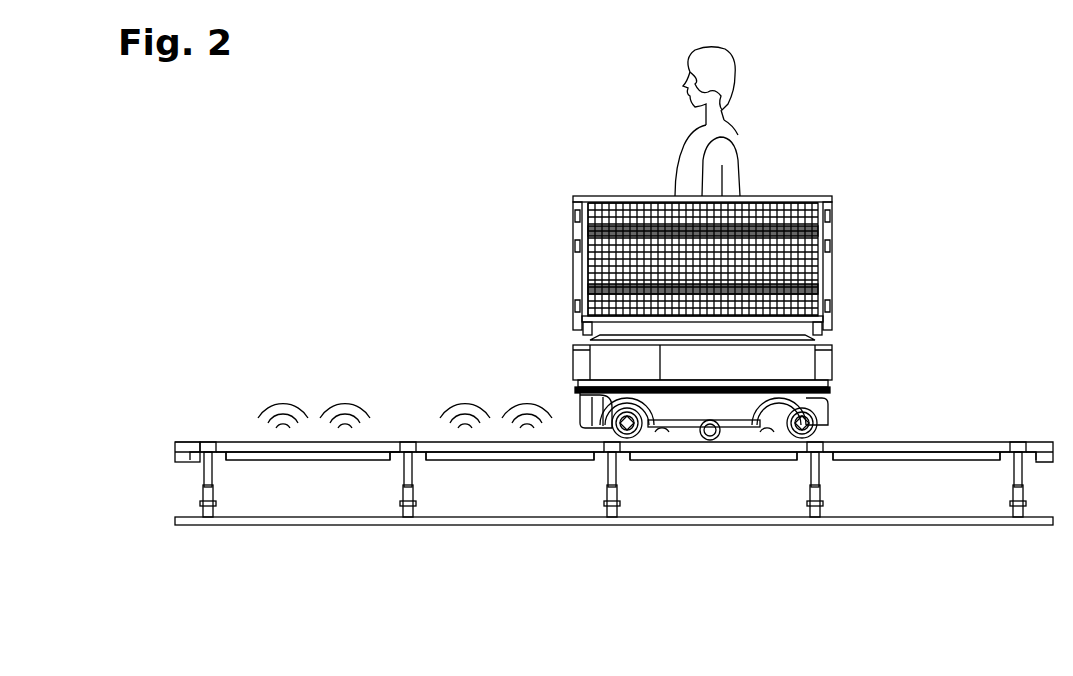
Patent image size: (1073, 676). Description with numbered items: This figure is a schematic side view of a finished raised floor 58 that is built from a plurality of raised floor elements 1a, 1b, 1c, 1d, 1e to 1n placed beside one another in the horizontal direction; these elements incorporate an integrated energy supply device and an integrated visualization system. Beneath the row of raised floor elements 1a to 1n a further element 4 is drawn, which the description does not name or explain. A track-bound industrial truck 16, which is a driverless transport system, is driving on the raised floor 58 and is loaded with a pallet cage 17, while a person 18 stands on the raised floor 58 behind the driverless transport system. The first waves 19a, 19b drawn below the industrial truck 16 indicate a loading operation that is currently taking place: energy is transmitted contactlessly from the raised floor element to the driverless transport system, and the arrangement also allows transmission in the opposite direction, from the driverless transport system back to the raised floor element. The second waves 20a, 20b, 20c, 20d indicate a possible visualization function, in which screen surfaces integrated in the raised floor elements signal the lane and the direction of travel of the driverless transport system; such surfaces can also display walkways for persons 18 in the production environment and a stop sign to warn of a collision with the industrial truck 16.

The raised floor 58 is at (985, 342).
The base plate 4 is at (925, 527).
The raised floor element 1a is at (188, 440).
The raised floor element 1b is at (229, 442).
The raised floor element 1c is at (421, 446).
The raised floor element 1d is at (717, 445).
The raised floor element 1e is at (921, 445).
The raised floor element 1n is at (1037, 445).
The second wave 20a is at (261, 416).
The second wave 20b is at (326, 416).
The second wave 20c is at (459, 416).
The second wave 20d is at (506, 416).
The track-bound industrial truck 16 is at (580, 410).
The pallet cage 17 is at (596, 252).
The person 18 is at (733, 128).
The first wave 19a is at (662, 440).
The first wave 19b is at (768, 438).